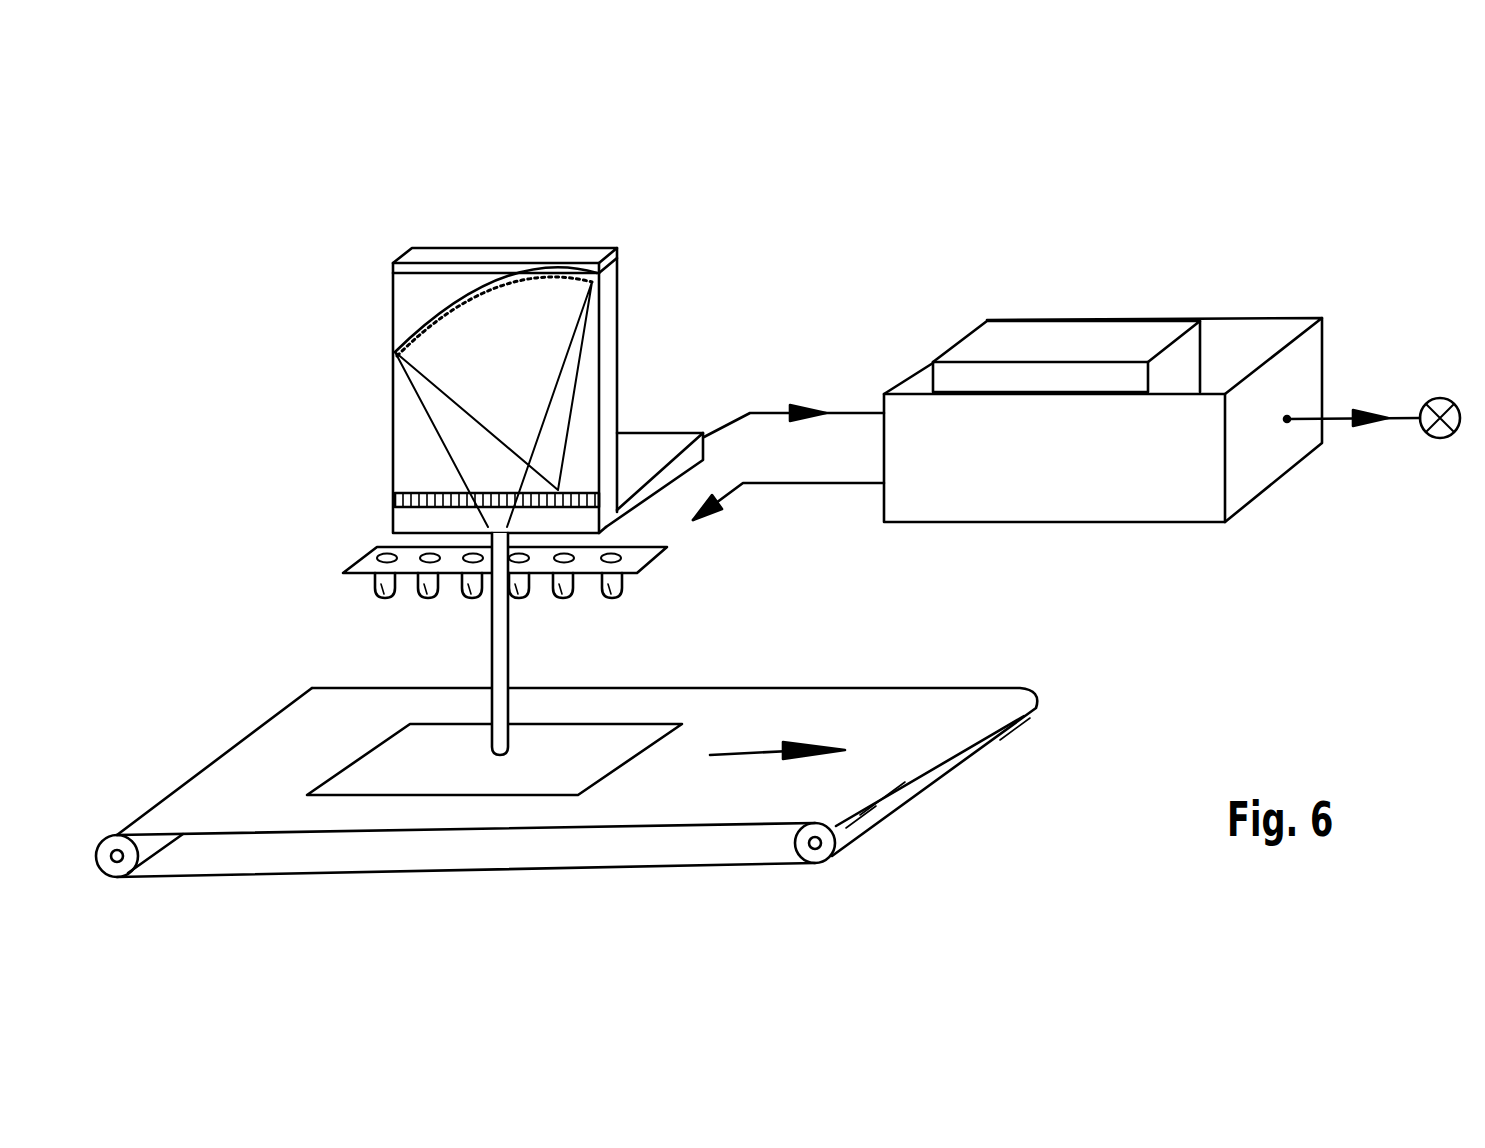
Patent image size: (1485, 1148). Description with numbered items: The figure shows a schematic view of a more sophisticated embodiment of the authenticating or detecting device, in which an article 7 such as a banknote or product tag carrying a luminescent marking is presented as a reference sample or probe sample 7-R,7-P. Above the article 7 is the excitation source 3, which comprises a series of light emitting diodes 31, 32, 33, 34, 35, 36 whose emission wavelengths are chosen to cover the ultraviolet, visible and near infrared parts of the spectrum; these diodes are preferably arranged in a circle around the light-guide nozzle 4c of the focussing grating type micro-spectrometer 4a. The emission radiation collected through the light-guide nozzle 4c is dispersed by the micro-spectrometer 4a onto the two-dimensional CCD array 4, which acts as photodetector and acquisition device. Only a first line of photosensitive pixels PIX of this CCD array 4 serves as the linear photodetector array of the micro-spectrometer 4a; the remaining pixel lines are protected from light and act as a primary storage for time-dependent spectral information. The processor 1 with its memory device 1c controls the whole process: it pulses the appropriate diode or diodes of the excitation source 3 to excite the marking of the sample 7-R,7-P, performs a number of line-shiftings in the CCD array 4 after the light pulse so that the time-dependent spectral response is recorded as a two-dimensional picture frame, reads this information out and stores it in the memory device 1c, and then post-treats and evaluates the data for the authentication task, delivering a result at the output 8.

The processor 1 is at (1094, 512).
The memory device 1c is at (1153, 333).
The excitation source 3 is at (667, 548).
The light emitting diode 31 is at (617, 597).
The light emitting diode 32 is at (567, 597).
The light emitting diode 33 is at (528, 598).
The light emitting diode 34 is at (470, 596).
The light emitting diode 35 is at (425, 597).
The light emitting diode 36 is at (382, 592).
The two-dimensional CCD array 4 is at (653, 443).
The focussing grating type micro-spectrometer 4a is at (593, 252).
The light-guide nozzle 4c is at (500, 700).
The article 7 is at (390, 762).
The reference sample and probe sample 7-R,7-P is at (452, 827).
The output / signal indicator 8 is at (1433, 440).
The photosensitive pixels PIX is at (403, 502).